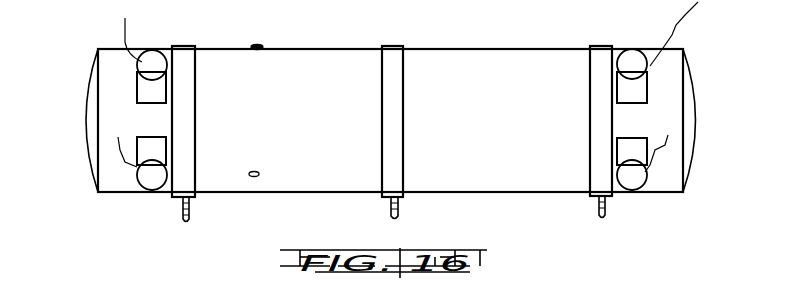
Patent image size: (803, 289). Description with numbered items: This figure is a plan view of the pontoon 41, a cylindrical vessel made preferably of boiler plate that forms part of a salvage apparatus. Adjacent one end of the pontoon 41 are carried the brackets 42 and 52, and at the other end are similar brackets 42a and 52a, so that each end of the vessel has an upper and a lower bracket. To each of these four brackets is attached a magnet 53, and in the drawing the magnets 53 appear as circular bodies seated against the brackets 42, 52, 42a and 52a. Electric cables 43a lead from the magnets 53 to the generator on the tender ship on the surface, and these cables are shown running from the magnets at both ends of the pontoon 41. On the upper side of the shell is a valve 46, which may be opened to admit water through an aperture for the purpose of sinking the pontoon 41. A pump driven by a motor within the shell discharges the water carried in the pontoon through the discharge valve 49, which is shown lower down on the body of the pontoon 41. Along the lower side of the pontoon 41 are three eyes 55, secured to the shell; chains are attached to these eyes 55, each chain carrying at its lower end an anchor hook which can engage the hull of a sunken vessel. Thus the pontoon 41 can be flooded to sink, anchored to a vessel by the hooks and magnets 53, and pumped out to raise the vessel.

The pontoon 41 is at (480, 170).
The bracket 42 is at (638, 95).
The bracket 42a is at (142, 88).
The electric cable 43a is at (125, 18).
The valve 46 is at (262, 47).
The discharge valve 49 is at (265, 158).
The bracket 52 is at (637, 153).
The bracket 52a is at (145, 151).
The magnet 53 is at (150, 62).
The eye 55 is at (183, 208).